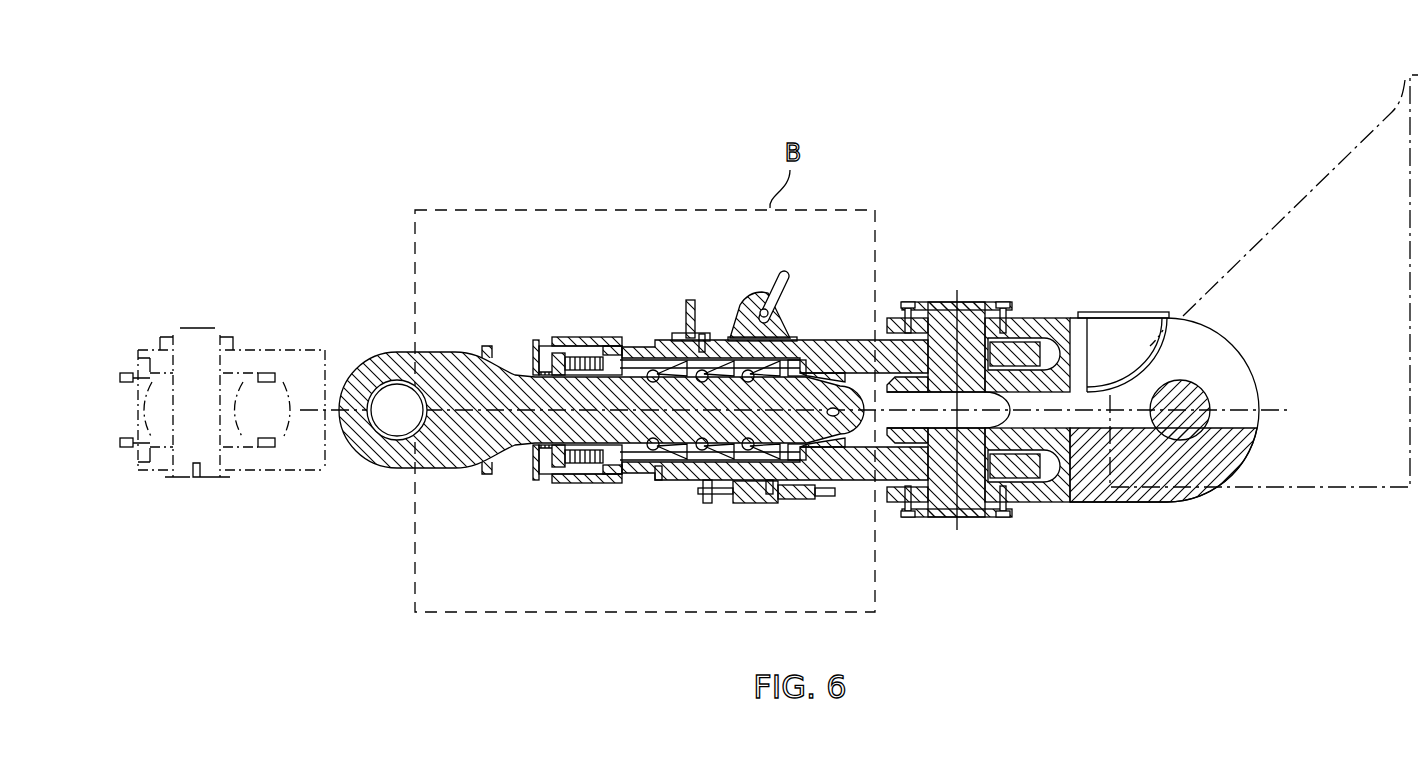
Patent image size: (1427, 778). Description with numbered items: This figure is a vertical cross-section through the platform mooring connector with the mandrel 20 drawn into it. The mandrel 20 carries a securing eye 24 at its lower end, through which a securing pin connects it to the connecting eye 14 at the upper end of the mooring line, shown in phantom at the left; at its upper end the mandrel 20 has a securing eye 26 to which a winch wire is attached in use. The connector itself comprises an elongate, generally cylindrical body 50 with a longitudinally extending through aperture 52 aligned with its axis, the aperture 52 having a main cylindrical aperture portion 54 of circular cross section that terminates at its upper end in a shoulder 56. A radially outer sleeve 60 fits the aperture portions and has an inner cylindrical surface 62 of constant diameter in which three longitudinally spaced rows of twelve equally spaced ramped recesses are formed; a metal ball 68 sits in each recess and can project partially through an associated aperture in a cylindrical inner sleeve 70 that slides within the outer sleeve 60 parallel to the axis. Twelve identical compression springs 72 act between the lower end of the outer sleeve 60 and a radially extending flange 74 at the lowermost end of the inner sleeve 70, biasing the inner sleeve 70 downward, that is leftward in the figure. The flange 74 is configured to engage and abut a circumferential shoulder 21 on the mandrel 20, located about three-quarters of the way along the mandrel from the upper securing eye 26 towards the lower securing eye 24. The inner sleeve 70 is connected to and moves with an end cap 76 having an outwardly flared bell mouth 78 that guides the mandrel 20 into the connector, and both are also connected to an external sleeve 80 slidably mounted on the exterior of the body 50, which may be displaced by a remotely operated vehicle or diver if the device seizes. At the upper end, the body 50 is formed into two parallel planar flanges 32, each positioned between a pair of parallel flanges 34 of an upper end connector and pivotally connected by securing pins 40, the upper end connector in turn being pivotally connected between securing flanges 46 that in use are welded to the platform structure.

The connecting eye 14 is at (202, 300).
The mandrel 20 is at (520, 395).
The circumferential shoulder 21 is at (570, 365).
The securing eye 24 is at (397, 380).
The securing eye 26 is at (836, 408).
The planar flanges 32 is at (1020, 350).
The parallel flanges 34 is at (1047, 330).
The securing pins 40 is at (935, 505).
The securing flanges 46 is at (1350, 326).
The body 50 is at (822, 340).
The through aperture 52 is at (842, 452).
The main cylindrical aperture portion 54 is at (745, 504).
The shoulder 56 is at (820, 500).
The radially outer sleeve 60 is at (700, 336).
The inner cylindrical surface 62 is at (620, 360).
The metal ball 68 is at (660, 470).
The inner sleeve 70 is at (637, 465).
The compression springs 72 is at (580, 465).
The radially extending flange 74 is at (556, 360).
The end cap 76 is at (535, 450).
The bell mouth 78 is at (510, 372).
The external sleeve 80 is at (567, 484).